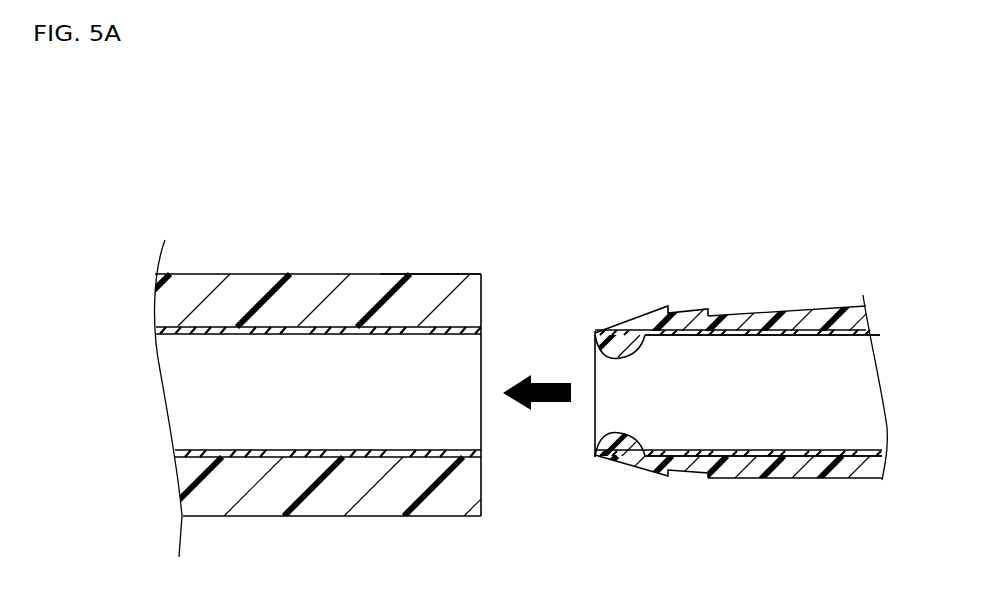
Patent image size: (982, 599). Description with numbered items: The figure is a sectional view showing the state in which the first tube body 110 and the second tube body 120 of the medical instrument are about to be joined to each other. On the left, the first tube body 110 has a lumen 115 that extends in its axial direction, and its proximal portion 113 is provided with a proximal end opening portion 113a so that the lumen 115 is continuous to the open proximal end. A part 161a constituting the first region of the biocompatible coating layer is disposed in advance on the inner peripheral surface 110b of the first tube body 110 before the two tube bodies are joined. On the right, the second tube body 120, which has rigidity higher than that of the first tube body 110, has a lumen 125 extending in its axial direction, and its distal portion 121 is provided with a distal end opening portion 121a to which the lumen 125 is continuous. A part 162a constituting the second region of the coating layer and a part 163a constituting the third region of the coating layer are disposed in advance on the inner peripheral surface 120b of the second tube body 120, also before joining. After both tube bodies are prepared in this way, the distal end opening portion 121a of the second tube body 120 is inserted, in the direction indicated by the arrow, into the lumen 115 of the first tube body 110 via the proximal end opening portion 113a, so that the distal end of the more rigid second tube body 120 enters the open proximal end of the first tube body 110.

The first tube body 110 is at (203, 290).
The inner peripheral surface of the first tube body 110b is at (350, 323).
The proximal portion of the first tube body 113 is at (440, 258).
The proximal end opening portion of the first tube body 113a is at (482, 355).
The lumen of the first tube body 115 is at (260, 367).
The part constituting the first region of the coating layer 161a is at (287, 457).
The second tube body 120 is at (848, 304).
The inner peripheral surface of the second tube body 120b is at (783, 333).
The distal portion of the second tube body 121 is at (646, 300).
The distal end opening portion of the second tube body 121a is at (595, 360).
The lumen of the second tube body 125 is at (712, 390).
The part constituting the second region of the coating layer 162a is at (742, 455).
The part constituting the third region of the coating layer 163a is at (623, 453).